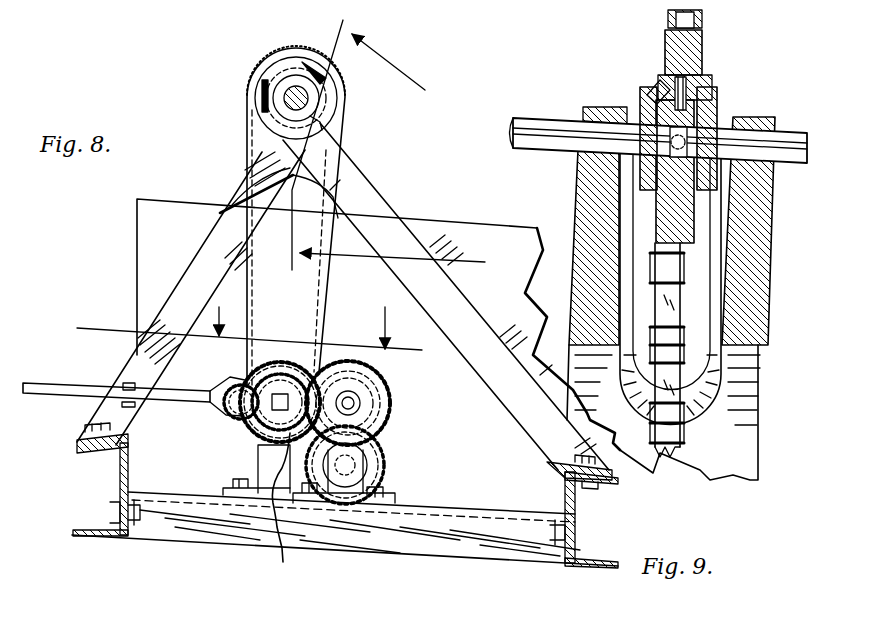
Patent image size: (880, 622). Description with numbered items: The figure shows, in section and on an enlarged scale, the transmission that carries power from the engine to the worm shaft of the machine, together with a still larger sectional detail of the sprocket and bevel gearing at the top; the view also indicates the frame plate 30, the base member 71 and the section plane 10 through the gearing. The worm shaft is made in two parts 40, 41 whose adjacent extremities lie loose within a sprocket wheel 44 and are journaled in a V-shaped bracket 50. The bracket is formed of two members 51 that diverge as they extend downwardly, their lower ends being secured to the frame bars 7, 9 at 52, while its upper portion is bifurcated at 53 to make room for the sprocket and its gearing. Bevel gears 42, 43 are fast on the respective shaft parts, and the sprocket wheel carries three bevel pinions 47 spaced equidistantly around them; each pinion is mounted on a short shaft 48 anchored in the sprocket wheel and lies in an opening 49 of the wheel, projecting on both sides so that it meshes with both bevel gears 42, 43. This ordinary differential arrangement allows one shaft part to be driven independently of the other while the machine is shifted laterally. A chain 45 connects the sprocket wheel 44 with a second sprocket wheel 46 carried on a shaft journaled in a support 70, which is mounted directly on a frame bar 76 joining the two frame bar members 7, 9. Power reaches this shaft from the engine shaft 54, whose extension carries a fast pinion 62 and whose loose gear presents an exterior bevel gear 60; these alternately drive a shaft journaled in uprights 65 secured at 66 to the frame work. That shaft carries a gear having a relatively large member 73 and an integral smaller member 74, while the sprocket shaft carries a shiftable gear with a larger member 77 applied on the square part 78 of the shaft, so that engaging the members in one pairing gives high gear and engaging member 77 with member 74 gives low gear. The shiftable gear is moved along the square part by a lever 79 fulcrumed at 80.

In FIG. 8, the frame bar 7 is at (577, 512).
In FIG. 8, the frame bar 9 is at (82, 484).
In FIG. 8, the section line 10- 10 is at (249, 316).
In FIG. 8, the frame plate 30 is at (137, 285).
In FIG. 9, the shaft part 40 is at (780, 142).
In FIG. 8, the shaft part 41 is at (308, 98).
In FIG. 9, the shaft part 41 is at (550, 122).
In FIG. 8, the bevel gear 42 is at (297, 57).
In FIG. 9, the bevel gear 42 is at (645, 100).
In FIG. 9, the bevel gear 43 is at (720, 105).
In FIG. 8, the sprocket wheel 44 is at (272, 63).
In FIG. 9, the sprocket wheel 44 is at (703, 45).
In FIG. 8, the chain 45 is at (247, 137).
In FIG. 9, the chain 45 is at (672, 308).
In FIG. 8, the second sprocket wheel 46 is at (287, 360).
In FIG. 8, the bevel gear 47 is at (262, 84).
In FIG. 9, the bevel gear 47 is at (655, 82).
In FIG. 9, the short shaft 48 is at (664, 70).
In FIG. 9, the opening 49 is at (690, 86).
In FIG. 8, the V-shaped bracket 50 is at (312, 186).
In FIG. 8, the bracket member 51 is at (203, 263).
In FIG. 8, the securing point 52 is at (85, 433).
In FIG. 9, the bifurcation 53 is at (715, 222).
In FIG. 8, the engine shaft 54 is at (358, 403).
In FIG. 8, the exterior bevel gear 60 is at (384, 452).
In FIG. 8, the fast pinion 62 is at (372, 464).
In FIG. 8, the upright 65 is at (362, 398).
In FIG. 8, the securing point 66 is at (230, 483).
In FIG. 8, the support 70 is at (258, 465).
In FIG. 9, the support 70 is at (597, 213).
In FIG. 8, the base plate 71 is at (456, 545).
In FIG. 8, the large gear member 73 is at (385, 390).
In FIG. 8, the small gear member 74 is at (358, 362).
In FIG. 8, the frame bar 76 is at (292, 507).
In FIG. 8, the large gear member 77 is at (262, 364).
In FIG. 8, the square part 78 is at (250, 418).
In FIG. 8, the lever 79 is at (176, 402).
In FIG. 8, the fulcrum 80 is at (126, 383).